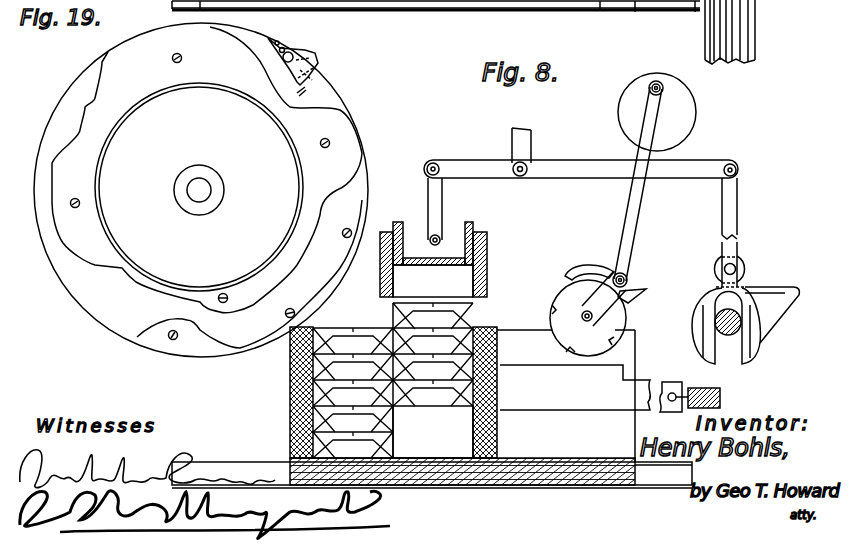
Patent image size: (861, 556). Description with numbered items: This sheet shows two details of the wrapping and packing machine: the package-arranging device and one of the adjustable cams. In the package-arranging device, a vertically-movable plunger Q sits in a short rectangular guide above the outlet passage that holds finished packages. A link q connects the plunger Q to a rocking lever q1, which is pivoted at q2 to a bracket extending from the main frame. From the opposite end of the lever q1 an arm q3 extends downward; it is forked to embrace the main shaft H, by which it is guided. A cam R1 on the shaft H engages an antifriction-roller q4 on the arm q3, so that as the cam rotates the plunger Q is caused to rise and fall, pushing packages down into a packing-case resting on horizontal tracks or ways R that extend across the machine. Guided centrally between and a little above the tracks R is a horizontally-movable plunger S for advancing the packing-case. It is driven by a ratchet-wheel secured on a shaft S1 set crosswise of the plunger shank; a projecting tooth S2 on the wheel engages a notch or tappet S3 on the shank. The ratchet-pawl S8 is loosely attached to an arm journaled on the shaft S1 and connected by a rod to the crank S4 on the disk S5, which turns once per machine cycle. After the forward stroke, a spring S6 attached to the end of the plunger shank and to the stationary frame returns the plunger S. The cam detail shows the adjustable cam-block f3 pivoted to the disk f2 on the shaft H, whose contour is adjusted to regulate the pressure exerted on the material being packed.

In FIG. 19, the disk f2 is at (199, 187).
In FIG. 19, the adjustable cam-block f3 is at (305, 70).
In FIG. 19, the horizontal tracks or ways R is at (436, 15).
In FIG. 8, the horizontal tracks or ways R is at (432, 473).
In FIG. 8, the cam R1 is at (745, 325).
In FIG. 8, the main shaft H is at (728, 335).
In FIG. 8, the link q is at (444, 211).
In FIG. 8, the rocking lever q1 is at (581, 162).
In FIG. 8, the pivot q2 is at (533, 150).
In FIG. 8, the arm q3 is at (739, 232).
In FIG. 8, the antifriction-roller q4 is at (746, 268).
In FIG. 8, the vertically-movable plunger Q is at (428, 268).
In FIG. 8, the horizontally-movable plunger S is at (588, 318).
In FIG. 8, the shaft S1 is at (583, 310).
In FIG. 8, the projecting tooth S2 is at (636, 288).
In FIG. 8, the notch or tappet S3 is at (636, 375).
In FIG. 8, the crank S4 is at (657, 112).
In FIG. 8, the disk S5 is at (638, 184).
In FIG. 8, the spring S6 is at (702, 388).
In FIG. 8, the ratchet-pawl S8 is at (589, 262).